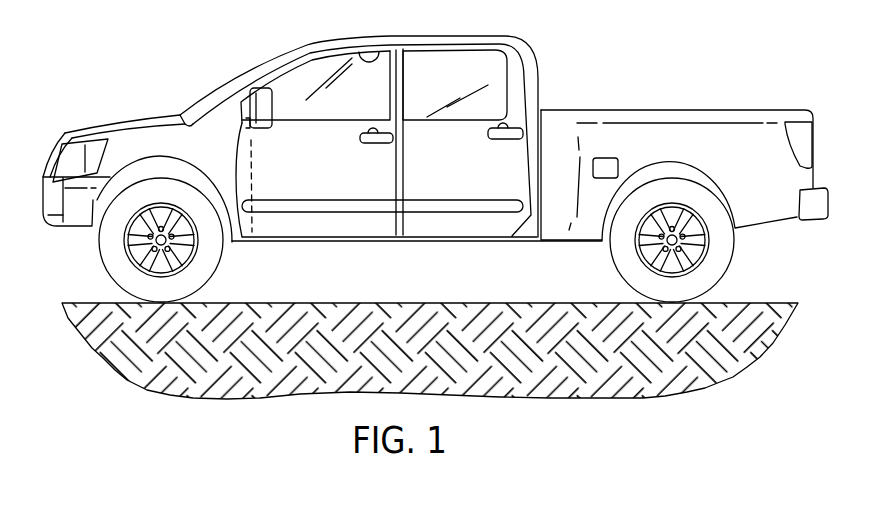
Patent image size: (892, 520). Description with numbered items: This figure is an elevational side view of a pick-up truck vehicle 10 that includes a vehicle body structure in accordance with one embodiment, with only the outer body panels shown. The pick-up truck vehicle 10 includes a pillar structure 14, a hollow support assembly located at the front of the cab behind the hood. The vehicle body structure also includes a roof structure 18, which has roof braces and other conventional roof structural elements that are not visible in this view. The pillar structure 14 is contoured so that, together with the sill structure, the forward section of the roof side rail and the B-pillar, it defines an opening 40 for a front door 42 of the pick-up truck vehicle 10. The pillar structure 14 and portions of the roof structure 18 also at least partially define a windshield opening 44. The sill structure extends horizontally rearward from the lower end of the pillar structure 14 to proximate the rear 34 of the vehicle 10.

The pick-up truck vehicle 10 is at (435, 151).
The pillar structure 14 is at (232, 110).
The roof structure 18 is at (299, 54).
The rear 34 is at (770, 228).
The opening 40 is at (385, 58).
The front door 42 is at (343, 220).
The windshield opening 44 is at (200, 102).